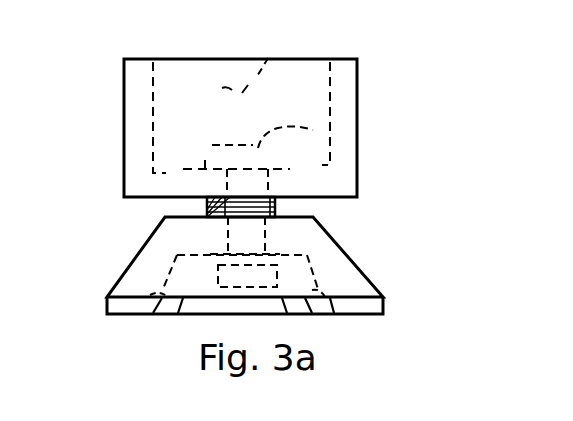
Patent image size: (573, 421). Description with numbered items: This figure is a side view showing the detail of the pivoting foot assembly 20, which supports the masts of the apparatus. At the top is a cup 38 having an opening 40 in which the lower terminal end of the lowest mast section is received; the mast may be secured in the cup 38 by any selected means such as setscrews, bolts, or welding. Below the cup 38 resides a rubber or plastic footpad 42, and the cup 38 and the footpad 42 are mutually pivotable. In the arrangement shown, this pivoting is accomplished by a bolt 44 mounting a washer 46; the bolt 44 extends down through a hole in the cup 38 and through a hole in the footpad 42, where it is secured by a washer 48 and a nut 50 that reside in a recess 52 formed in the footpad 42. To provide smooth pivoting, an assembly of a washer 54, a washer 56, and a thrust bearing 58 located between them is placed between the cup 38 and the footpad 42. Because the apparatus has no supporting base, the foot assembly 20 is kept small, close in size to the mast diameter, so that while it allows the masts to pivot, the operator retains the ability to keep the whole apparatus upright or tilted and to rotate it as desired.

The pivoting foot assembly 20 is at (404, 149).
The cup 38 is at (357, 83).
The opening 40 is at (268, 58).
The footpad 42 is at (383, 297).
The bolt 44 is at (333, 135).
The washer 46 is at (275, 168).
The washer 48 is at (182, 302).
The nut 50 is at (288, 305).
The recess 52 is at (310, 303).
The washer 54 is at (207, 205).
The washer 56 is at (205, 217).
The thrust bearing 58 is at (207, 212).